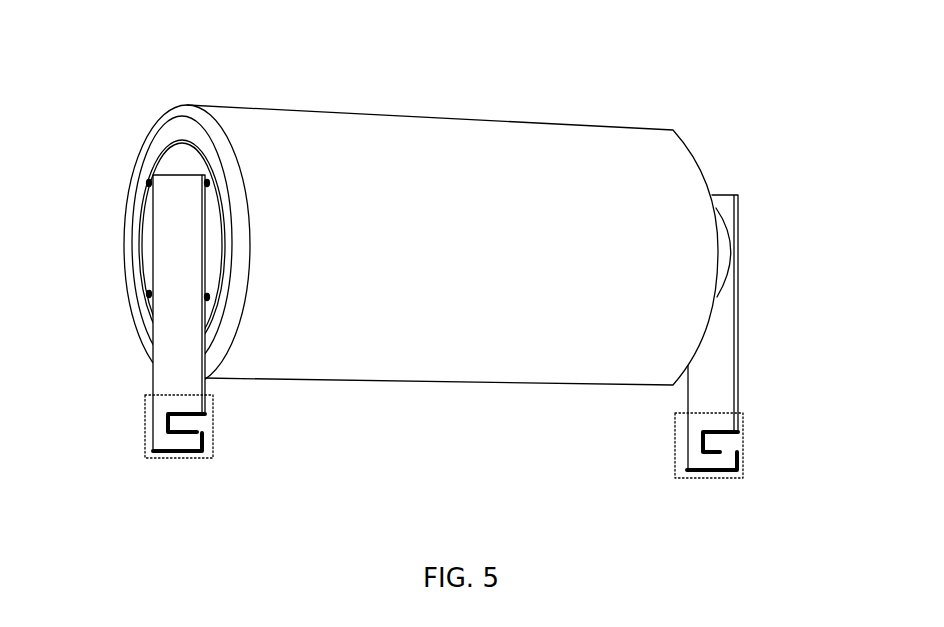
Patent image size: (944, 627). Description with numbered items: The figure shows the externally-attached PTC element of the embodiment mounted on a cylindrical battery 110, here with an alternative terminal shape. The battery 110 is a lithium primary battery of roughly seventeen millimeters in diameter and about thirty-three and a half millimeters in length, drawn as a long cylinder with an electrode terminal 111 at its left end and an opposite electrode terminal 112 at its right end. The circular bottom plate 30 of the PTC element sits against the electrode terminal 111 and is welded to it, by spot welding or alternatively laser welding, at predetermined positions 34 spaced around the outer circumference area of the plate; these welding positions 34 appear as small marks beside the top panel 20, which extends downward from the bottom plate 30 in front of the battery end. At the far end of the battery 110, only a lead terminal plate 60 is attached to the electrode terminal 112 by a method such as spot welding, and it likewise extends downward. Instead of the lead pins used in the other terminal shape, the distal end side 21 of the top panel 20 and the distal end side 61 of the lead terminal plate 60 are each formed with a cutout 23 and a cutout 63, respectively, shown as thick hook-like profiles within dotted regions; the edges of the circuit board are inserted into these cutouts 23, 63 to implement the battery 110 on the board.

The cylindrical battery 110 is at (472, 238).
The electrode terminal 111 is at (203, 298).
The electrode terminal 112 is at (720, 233).
The top panel 20 is at (180, 356).
The distal end side 21 is at (153, 459).
The cutout 23 is at (205, 429).
The bottom plate 30 is at (165, 165).
The predetermined positions 34 is at (201, 180).
The lead terminal plate 60 is at (698, 364).
The distal end side 61 is at (673, 468).
The cutout 63 is at (724, 448).